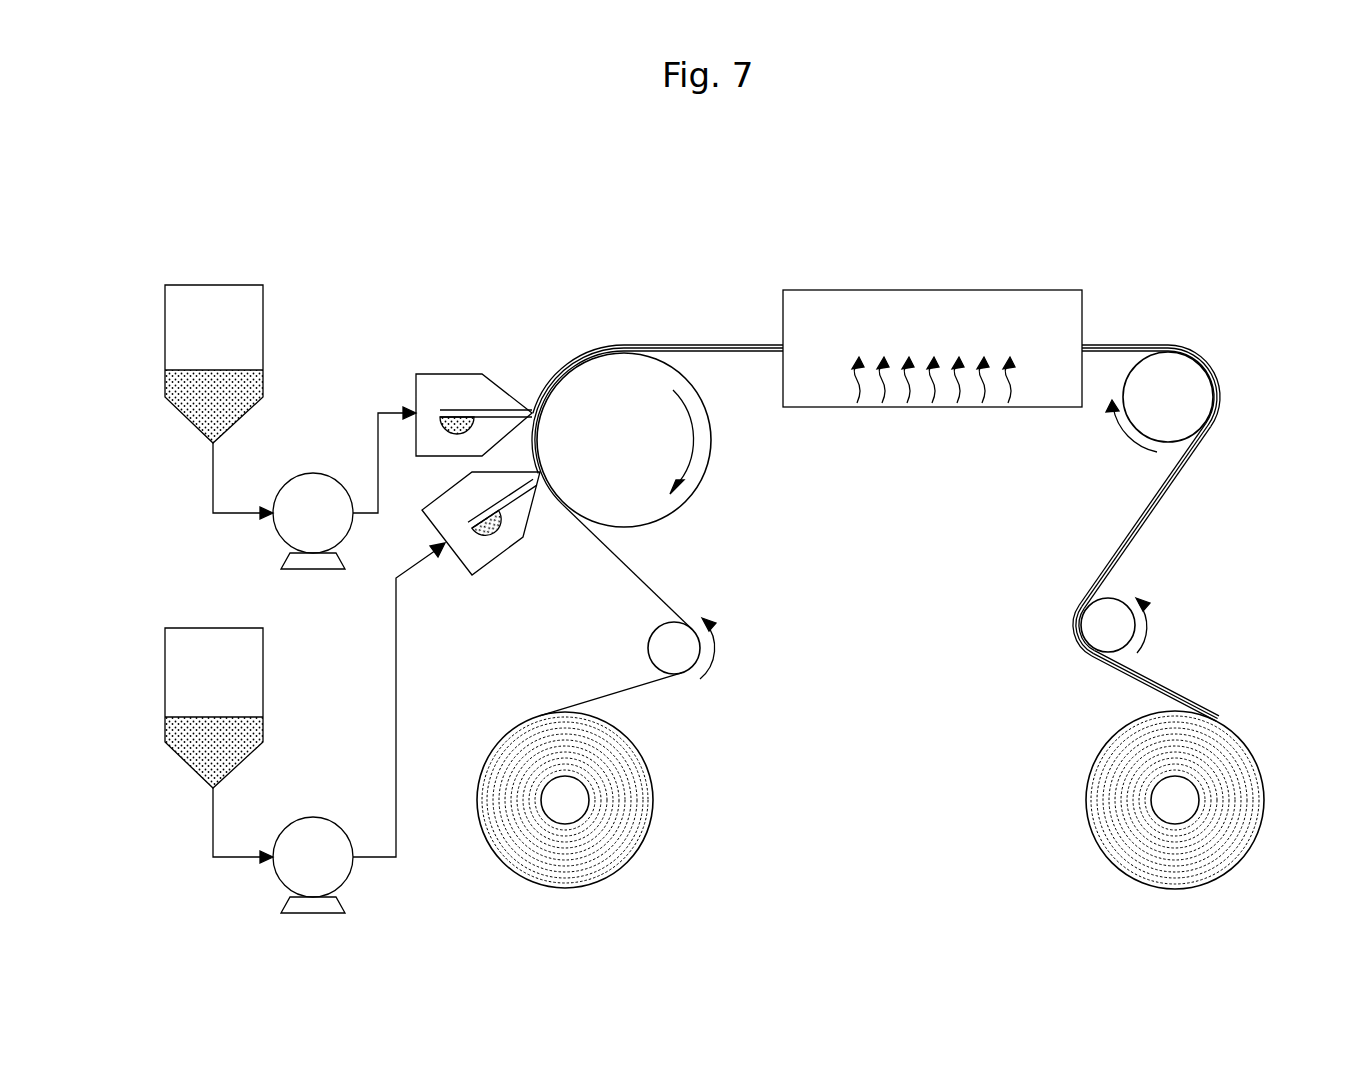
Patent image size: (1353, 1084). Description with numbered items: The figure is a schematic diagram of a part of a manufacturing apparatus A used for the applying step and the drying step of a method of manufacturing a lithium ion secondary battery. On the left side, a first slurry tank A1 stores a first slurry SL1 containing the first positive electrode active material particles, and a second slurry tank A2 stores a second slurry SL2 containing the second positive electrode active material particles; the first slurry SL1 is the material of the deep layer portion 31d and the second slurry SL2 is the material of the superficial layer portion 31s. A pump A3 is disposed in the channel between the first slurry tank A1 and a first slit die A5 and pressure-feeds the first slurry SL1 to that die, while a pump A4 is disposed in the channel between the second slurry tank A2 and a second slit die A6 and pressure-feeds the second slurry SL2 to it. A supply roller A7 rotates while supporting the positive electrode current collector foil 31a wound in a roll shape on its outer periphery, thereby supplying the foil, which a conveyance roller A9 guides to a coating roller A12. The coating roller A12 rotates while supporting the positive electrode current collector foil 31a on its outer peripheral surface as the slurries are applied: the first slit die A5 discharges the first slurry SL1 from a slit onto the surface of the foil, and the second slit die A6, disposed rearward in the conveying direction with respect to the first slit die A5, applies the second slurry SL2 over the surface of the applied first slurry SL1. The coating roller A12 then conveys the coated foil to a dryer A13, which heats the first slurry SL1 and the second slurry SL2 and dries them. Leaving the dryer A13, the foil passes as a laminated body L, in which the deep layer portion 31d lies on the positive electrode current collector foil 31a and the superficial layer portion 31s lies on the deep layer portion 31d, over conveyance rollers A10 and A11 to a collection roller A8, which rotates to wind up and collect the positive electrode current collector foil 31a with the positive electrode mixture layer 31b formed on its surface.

The manufacturing apparatus A is at (1172, 203).
The first slurry tank A1 is at (165, 671).
The second slurry tank A2 is at (165, 328).
The pump A3 is at (314, 817).
The pump A4 is at (314, 473).
The first slit die A5 is at (492, 560).
The second slit die A6 is at (447, 374).
The supply roller A7 is at (563, 802).
The collection roller A8 is at (1172, 802).
The conveyance roller A9 is at (648, 648).
The conveyance roller A10 is at (1185, 396).
The conveyance roller A11 is at (1095, 627).
The coating roller A12 is at (712, 456).
The dryer A13 is at (917, 290).
The first slurry SL1 is at (193, 750).
The second slurry SL2 is at (193, 405).
The laminated body L is at (1136, 327).
The positive electrode current collector foil 31a is at (646, 585).
The positive electrode mixture layer 31b is at (1197, 516).
The deep layer portion 31d is at (1161, 499).
The superficial layer portion 31s is at (1142, 530).